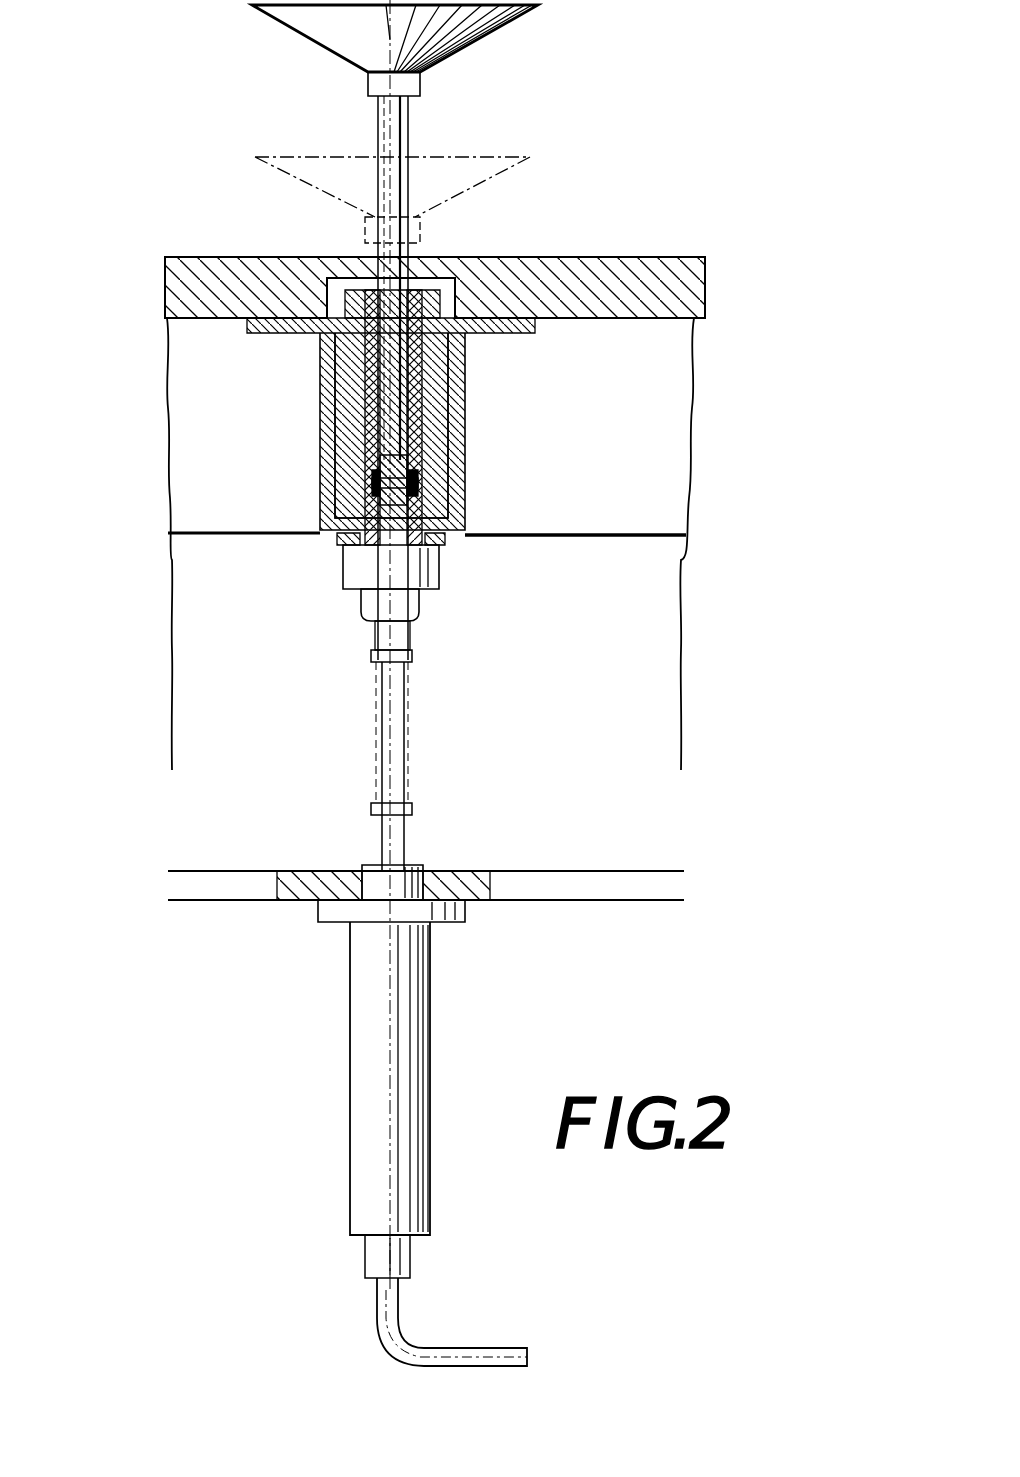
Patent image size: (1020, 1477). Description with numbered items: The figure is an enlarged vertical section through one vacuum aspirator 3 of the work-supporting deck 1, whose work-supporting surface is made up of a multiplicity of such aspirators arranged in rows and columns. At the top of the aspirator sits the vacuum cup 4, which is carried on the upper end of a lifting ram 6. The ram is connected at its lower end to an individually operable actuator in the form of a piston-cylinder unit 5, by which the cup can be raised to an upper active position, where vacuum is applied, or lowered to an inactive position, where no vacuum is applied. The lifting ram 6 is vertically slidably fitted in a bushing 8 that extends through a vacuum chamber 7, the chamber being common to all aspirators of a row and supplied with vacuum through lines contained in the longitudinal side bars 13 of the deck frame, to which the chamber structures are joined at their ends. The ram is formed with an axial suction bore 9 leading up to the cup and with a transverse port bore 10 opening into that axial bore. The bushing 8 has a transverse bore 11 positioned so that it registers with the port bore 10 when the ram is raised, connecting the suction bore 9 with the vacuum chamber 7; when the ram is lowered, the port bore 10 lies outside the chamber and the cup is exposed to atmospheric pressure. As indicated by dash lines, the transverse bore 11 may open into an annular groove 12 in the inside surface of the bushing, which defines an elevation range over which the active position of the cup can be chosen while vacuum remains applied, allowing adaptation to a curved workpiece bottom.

The work-supporting deck 1 is at (640, 255).
The vacuum aspirator 3 is at (312, 406).
The vacuum cup 4 is at (455, 28).
The piston-cylinder unit 5 is at (375, 1067).
The lifting ram 6 is at (410, 128).
The vacuum chamber 7 is at (440, 370).
The bushing 8 is at (370, 375).
The axial suction bore 9 is at (395, 140).
The transverse port bore 10 is at (410, 462).
The transverse bore 11 is at (370, 483).
The annular groove 12 is at (472, 497).
The longitudinal side bar 13 is at (665, 345).